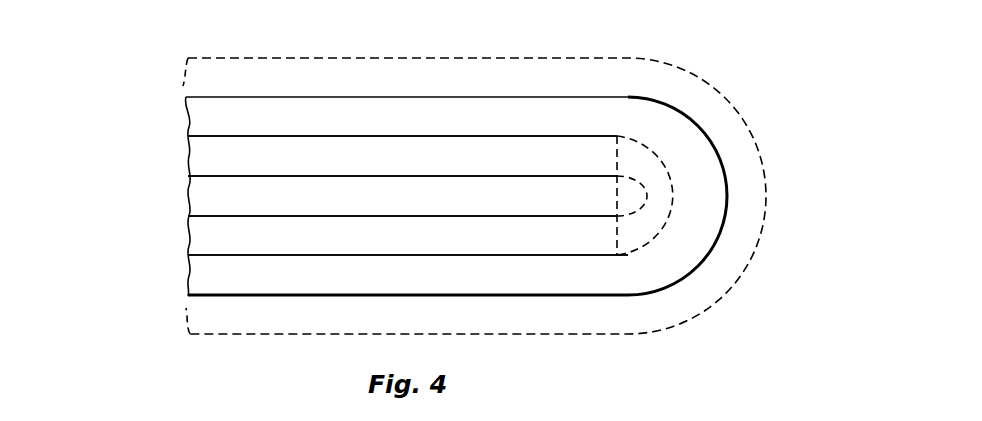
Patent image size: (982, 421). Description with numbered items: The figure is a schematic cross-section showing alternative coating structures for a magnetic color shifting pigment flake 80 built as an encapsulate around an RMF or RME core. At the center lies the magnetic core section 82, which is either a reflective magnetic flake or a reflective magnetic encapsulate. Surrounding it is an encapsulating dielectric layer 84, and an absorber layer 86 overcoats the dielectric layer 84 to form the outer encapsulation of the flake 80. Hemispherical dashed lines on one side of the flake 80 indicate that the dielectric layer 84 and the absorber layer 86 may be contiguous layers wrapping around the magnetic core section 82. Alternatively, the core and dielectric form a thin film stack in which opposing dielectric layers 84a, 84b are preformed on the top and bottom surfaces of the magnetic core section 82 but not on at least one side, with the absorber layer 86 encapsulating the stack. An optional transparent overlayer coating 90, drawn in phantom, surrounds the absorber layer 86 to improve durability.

The magnetic color shifting pigment flake 80 is at (465, 172).
The magnetic core section 82 is at (186, 196).
The encapsulating dielectric layer 84 is at (678, 219).
The upper dielectric layer 84a is at (186, 157).
The lower dielectric layer 84b is at (186, 237).
The absorber layer 86 is at (707, 257).
The transparent overlayer coating 90 is at (563, 58).